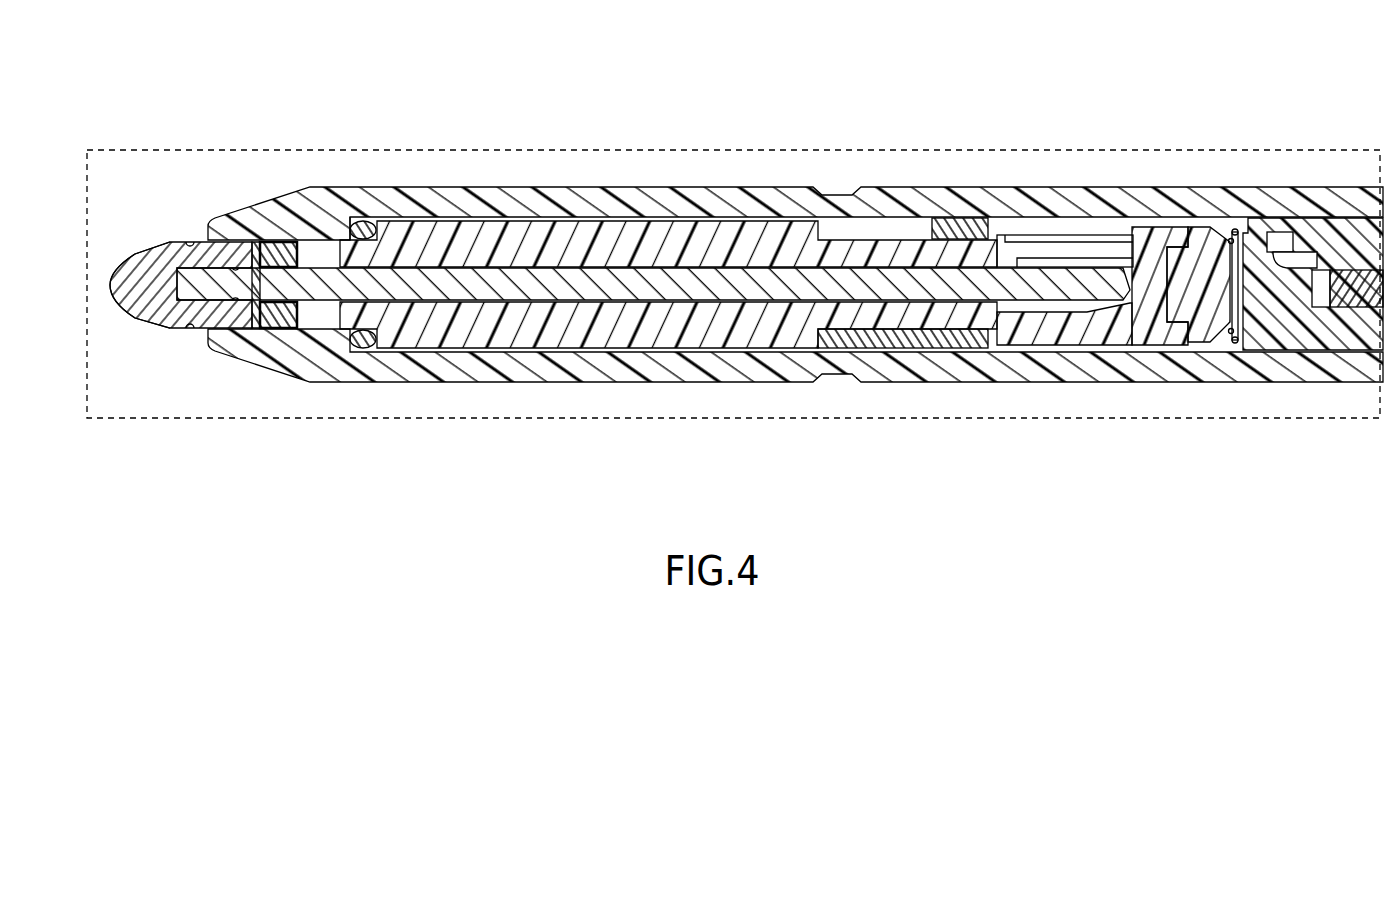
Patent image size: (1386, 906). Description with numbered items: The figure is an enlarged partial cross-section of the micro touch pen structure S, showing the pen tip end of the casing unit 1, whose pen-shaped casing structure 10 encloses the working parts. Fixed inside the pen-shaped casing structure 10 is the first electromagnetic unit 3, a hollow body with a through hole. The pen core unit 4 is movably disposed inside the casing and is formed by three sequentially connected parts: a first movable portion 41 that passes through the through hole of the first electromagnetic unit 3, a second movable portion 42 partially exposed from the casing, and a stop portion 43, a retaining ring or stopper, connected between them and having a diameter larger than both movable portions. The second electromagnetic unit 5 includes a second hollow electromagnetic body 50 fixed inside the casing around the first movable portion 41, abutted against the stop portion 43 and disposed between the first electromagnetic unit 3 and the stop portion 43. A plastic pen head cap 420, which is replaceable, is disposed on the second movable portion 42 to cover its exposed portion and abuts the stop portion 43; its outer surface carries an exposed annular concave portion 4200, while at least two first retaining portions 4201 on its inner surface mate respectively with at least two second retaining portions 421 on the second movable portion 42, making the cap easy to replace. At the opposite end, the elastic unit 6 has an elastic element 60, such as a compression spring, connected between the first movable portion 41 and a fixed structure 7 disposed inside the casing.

The micro touch pen structure S is at (88, 78).
The casing unit 1 is at (795, 210).
The pen-shaped casing structure 10 is at (1035, 188).
The first electromagnetic unit 3 is at (523, 246).
The pen core unit 4 is at (619, 259).
The first movable portion 41 is at (312, 283).
The second movable portion 42 is at (180, 287).
The plastic pen head cap 420 is at (138, 303).
The exposed annular concave portion 4200 is at (190, 240).
The first retaining portions 4201 is at (223, 317).
The second retaining portions 421 is at (255, 283).
The stop portion 43 is at (255, 283).
The second electromagnetic unit 5 is at (337, 368).
The second hollow electromagnetic body 50 is at (312, 283).
The elastic unit 6 is at (1117, 191).
The elastic element 60 is at (1232, 228).
The fixed structure 7 is at (1278, 290).